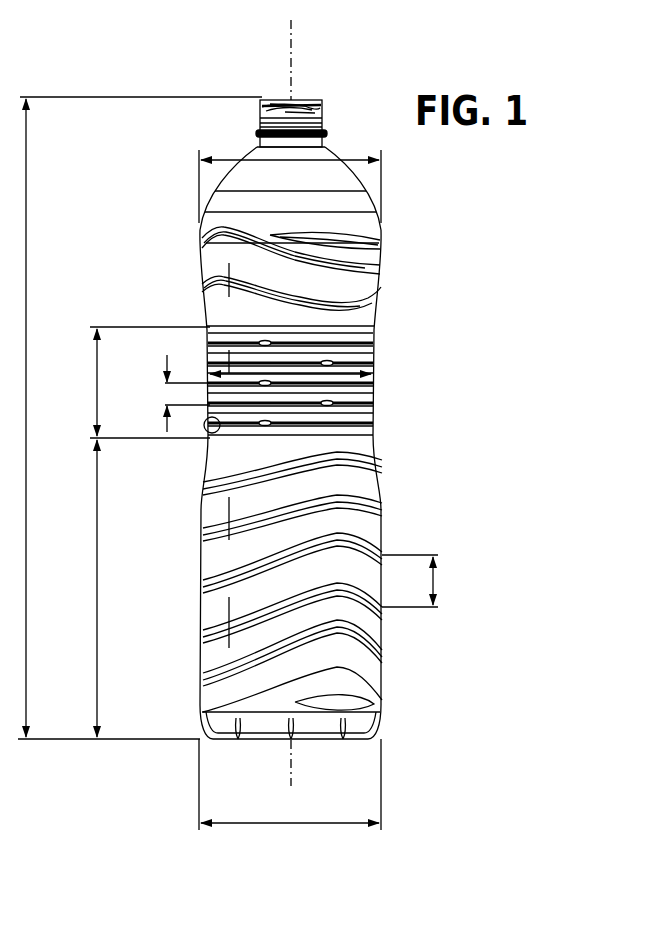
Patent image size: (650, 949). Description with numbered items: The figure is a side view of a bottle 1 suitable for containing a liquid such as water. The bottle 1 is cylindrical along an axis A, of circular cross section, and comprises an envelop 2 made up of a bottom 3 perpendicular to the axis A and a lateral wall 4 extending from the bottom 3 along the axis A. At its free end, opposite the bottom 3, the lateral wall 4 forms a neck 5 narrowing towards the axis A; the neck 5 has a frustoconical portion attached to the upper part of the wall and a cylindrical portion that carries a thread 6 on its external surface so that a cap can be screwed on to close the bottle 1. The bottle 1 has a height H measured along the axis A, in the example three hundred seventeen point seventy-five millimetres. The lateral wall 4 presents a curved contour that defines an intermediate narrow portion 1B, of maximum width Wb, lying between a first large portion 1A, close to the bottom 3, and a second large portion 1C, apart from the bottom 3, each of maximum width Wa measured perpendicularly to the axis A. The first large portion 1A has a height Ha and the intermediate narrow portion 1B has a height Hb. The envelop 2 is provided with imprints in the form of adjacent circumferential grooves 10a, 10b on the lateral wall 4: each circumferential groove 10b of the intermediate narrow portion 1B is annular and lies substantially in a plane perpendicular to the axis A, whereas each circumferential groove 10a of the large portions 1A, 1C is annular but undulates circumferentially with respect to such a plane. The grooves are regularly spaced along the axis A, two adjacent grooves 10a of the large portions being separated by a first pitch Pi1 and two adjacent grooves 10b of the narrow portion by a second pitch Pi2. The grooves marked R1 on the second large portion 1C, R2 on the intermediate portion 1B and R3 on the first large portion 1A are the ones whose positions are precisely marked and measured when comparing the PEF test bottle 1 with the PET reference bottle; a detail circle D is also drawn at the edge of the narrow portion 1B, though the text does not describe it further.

The bottle 1 is at (514, 349).
The first large portion 1A is at (366, 612).
The intermediate narrow portion 1B is at (378, 395).
The second large portion 1C is at (358, 220).
The envelop 2 is at (388, 532).
The bottom 3 is at (345, 741).
The lateral wall 4 is at (380, 297).
The neck 5 is at (316, 100).
The thread 6 is at (268, 102).
The circumferential groove of the large portions 10a is at (380, 491).
The circumferential groove of the intermediate narrow portion 10b is at (379, 357).
The axis A is at (293, 41).
The height H is at (133, 418).
The height of the first large portion Ha is at (77, 588).
The height of the intermediate narrow portion Hb is at (134, 382).
The maximum width of the large portions Wa is at (290, 498).
The maximum width of the intermediate narrow portion Wb is at (373, 372).
The first pitch Pi1 is at (428, 582).
The second pitch Pi2 is at (165, 393).
The measured groove on the second large portion R1 is at (228, 265).
The measured groove on the intermediate portion R2 is at (228, 345).
The measured groove on the first large portion R3 is at (224, 648).
The groove depth detail D is at (202, 433).